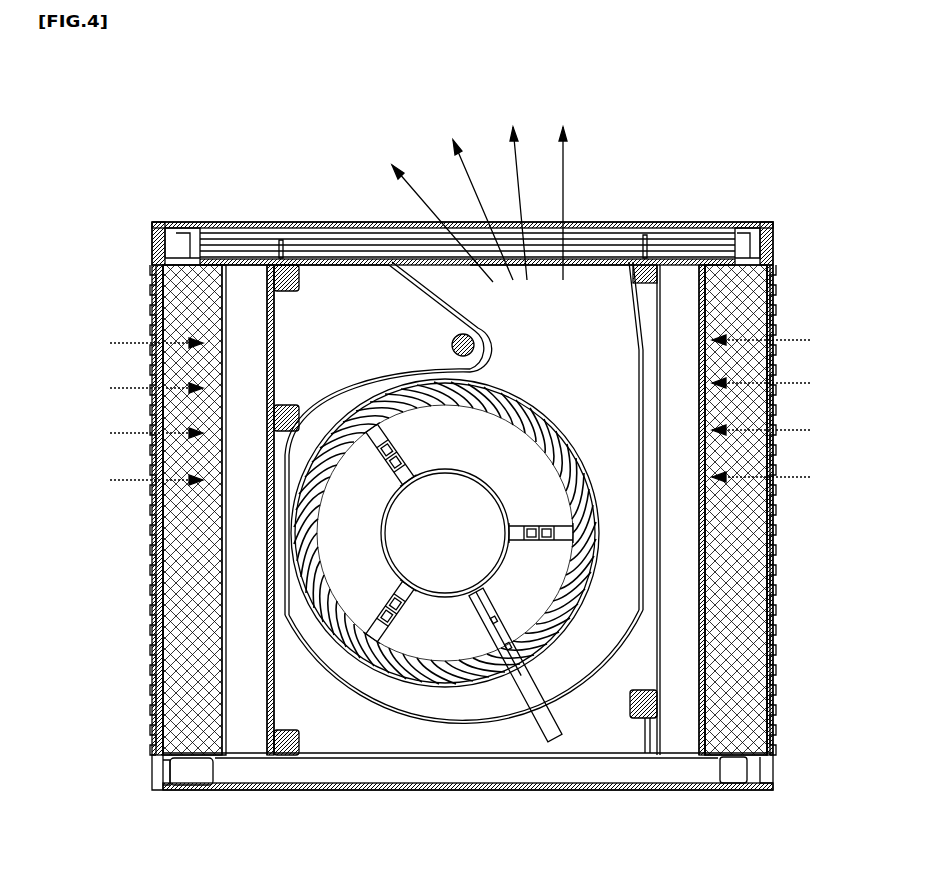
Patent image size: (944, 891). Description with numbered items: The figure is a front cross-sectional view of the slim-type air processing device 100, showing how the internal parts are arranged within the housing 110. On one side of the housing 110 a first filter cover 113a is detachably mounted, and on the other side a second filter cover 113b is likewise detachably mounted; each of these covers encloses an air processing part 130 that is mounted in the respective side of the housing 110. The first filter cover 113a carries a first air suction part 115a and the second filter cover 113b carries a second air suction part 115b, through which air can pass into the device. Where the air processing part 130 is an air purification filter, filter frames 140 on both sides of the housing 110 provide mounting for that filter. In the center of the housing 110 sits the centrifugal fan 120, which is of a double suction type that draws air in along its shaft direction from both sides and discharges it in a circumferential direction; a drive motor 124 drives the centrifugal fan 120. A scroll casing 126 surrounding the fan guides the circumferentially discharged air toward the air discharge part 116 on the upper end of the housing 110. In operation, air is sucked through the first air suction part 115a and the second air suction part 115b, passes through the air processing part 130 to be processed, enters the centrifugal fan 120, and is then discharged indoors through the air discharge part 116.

The slim-type air processing device 100 is at (477, 86).
The housing 110 is at (665, 790).
The first filter cover 113a is at (152, 512).
The second filter cover 113b is at (790, 512).
The first air suction part 115a is at (152, 406).
The second air suction part 115b is at (780, 405).
The air discharge part 116 is at (340, 222).
The centrifugal fan 120 is at (348, 719).
The drive motor 124 is at (457, 560).
The scroll casing 126 is at (450, 733).
The air processing part 130 is at (152, 572).
The filter frame 140 is at (210, 790).